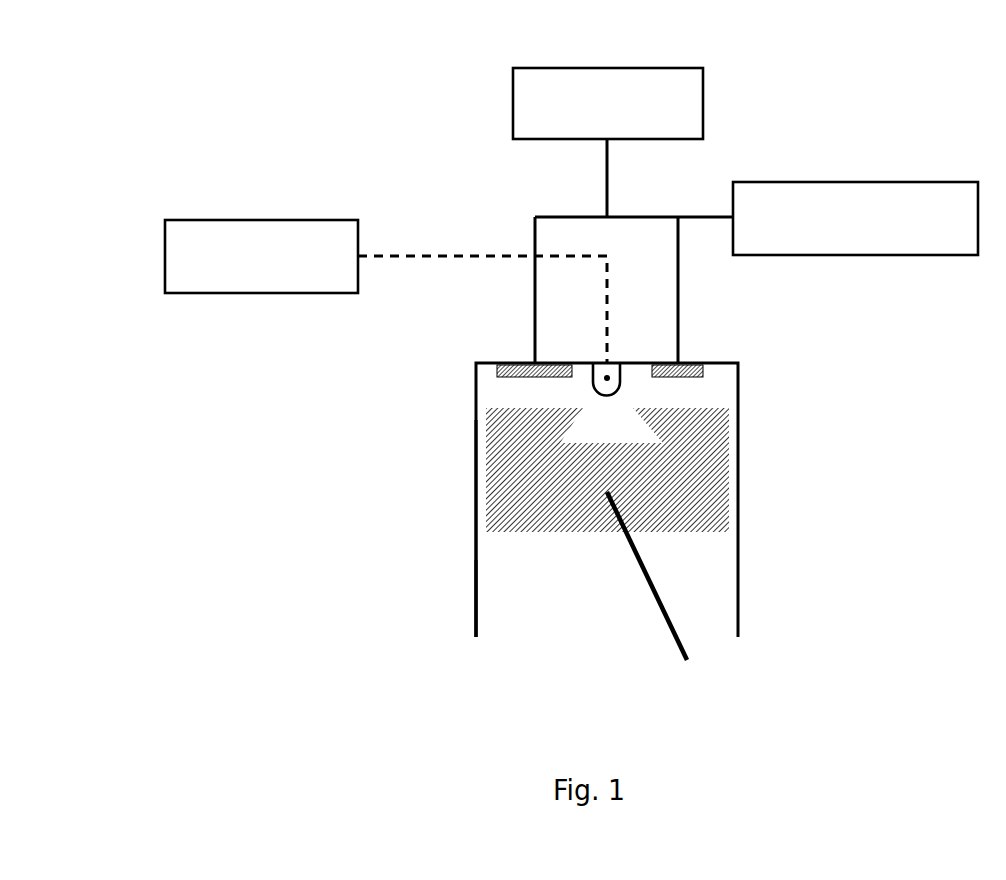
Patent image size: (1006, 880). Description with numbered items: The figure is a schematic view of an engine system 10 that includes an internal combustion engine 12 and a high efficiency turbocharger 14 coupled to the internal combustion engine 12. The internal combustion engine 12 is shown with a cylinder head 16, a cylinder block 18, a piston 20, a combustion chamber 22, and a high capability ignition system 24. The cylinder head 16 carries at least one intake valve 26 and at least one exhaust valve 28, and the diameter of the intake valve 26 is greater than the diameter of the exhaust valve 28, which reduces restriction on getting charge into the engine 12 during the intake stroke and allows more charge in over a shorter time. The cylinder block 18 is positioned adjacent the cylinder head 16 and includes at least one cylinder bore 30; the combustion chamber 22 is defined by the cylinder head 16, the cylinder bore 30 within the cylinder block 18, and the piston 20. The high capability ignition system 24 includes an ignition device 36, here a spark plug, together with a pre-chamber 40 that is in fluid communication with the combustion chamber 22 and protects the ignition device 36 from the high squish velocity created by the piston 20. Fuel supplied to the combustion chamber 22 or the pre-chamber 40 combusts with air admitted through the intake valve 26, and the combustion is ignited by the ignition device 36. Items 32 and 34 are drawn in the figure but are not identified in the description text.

The engine system 10 is at (312, 162).
The internal combustion engine 12 is at (388, 490).
The high efficiency turbocharger 14 is at (657, 69).
The cylinder head 16 is at (739, 362).
The cylinder block 18 is at (476, 565).
The piston 20 is at (685, 470).
The combustion chamber 22 is at (703, 395).
The high capability ignition system 24 is at (165, 305).
The intake valve 26 is at (505, 370).
The exhaust valve 28 is at (703, 373).
The cylinder bore 30 is at (500, 616).
The piston bowl 32 is at (600, 428).
The connecting rod 34 is at (685, 650).
The ignition device 36 is at (609, 373).
The pre-chamber 40 is at (618, 378).